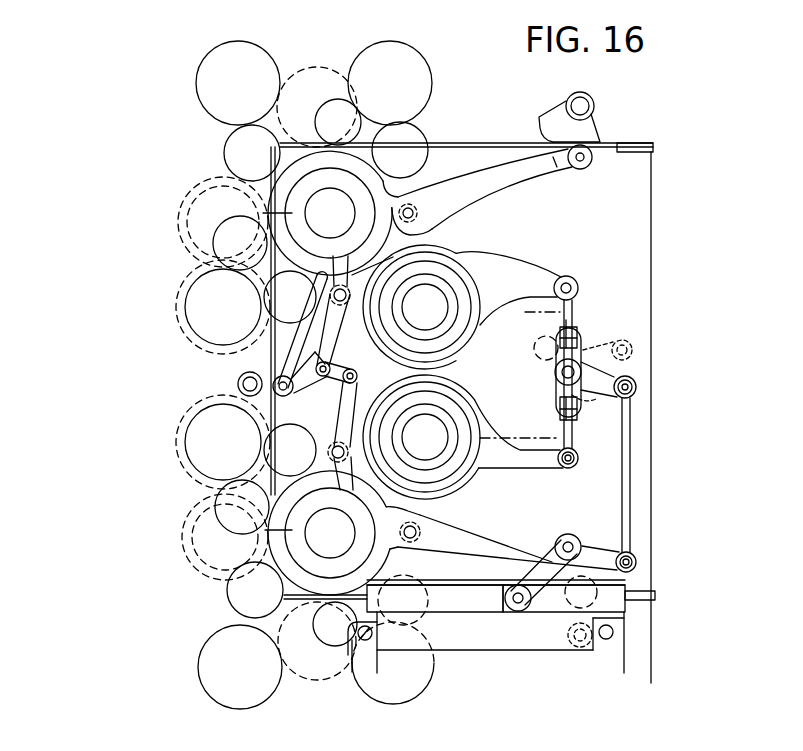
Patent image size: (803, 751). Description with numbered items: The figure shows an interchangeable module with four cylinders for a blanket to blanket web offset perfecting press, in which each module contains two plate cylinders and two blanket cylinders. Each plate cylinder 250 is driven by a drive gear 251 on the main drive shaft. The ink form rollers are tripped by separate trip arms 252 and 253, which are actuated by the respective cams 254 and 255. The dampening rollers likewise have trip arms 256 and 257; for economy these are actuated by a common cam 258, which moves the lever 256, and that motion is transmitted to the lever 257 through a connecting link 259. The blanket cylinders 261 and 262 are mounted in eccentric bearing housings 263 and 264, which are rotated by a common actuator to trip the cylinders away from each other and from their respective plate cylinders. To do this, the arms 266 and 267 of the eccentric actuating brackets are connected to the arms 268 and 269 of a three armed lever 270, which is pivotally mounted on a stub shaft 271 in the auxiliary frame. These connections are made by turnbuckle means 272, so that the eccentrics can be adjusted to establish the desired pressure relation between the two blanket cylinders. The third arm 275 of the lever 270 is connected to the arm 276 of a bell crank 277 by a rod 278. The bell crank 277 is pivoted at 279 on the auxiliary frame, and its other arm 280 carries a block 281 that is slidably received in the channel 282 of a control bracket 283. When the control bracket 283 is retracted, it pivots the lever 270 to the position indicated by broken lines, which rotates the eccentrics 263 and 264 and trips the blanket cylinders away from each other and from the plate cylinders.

The plate cylinder 250 is at (387, 238).
The drive gear 251 is at (185, 195).
The trip arm 252 is at (472, 193).
The trip arm 253 is at (478, 555).
The cam 254 is at (585, 125).
The cam 255 is at (556, 645).
The trip arm 256 is at (313, 328).
The trip arm 257 is at (343, 419).
The cam 258 is at (239, 379).
The connecting link 259 is at (342, 377).
The blanket cylinder 261 is at (473, 263).
The blanket cylinder 262 is at (448, 493).
The eccentric bearing housing 263 is at (458, 335).
The eccentric bearing housing 264 is at (465, 420).
The arm of eccentric actuating bracket 266 is at (570, 281).
The arm of eccentric actuating bracket 267 is at (553, 467).
The arm of three armed lever 268 is at (580, 348).
The arm of three armed lever 269 is at (580, 400).
The three armed lever 270 is at (557, 387).
The stub shaft 271 is at (553, 364).
The turnbuckle means 272 is at (577, 330).
The third arm 275 is at (600, 382).
The arm of bell crank 276 is at (600, 552).
The bell crank 277 is at (555, 539).
The rod 278 is at (630, 494).
The pivot 279 is at (563, 553).
The arm of bell crank 280 is at (545, 586).
The block 281 is at (505, 612).
The channel 282 is at (440, 600).
The control bracket 283 is at (428, 622).